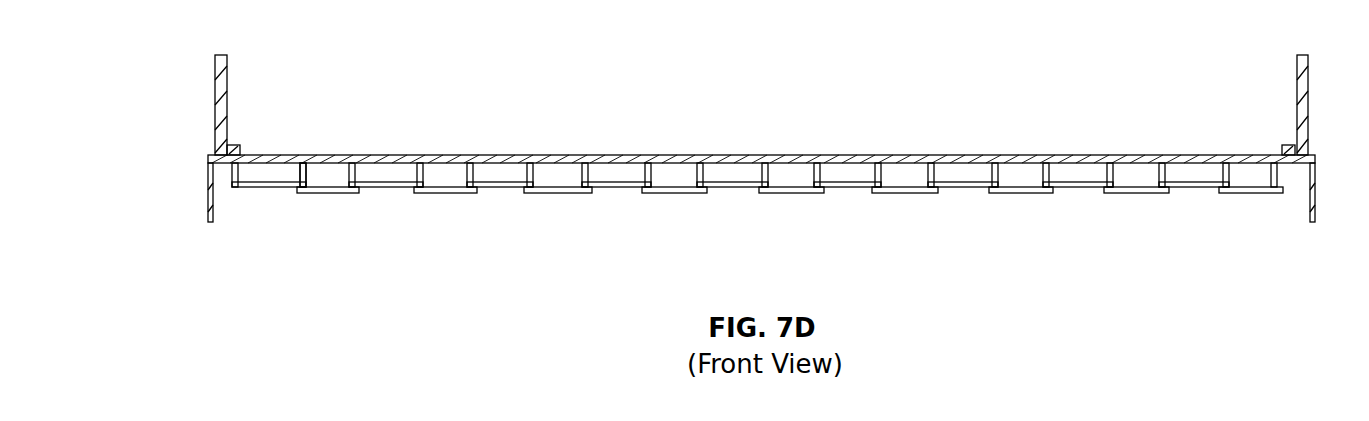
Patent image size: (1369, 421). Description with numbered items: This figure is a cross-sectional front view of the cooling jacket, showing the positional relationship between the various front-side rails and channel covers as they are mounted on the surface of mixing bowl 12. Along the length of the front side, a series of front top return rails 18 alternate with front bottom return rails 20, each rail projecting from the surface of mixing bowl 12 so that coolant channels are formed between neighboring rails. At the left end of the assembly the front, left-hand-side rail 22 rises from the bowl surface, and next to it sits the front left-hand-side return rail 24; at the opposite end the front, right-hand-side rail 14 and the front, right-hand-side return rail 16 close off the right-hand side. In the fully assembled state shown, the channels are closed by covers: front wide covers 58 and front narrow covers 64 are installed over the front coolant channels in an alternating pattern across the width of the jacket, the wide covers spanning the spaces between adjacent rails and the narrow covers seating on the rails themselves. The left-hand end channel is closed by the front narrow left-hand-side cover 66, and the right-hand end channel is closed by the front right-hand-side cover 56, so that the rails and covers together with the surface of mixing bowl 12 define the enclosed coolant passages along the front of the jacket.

The surface of mixing bowl 12 is at (207, 187).
The front, right-hand-side rail 14 is at (1280, 180).
The front, right-hand-side return rail 16 is at (1229, 172).
The front top return rails 18 is at (355, 172).
The front bottom return rails 20 is at (423, 172).
The front, left-hand-side rail 22 is at (240, 172).
The front left-hand-side return rail 24 is at (306, 172).
The front right-hand-side cover 56 is at (1257, 193).
The front wide covers 58 is at (339, 193).
The front narrow covers 64 is at (393, 188).
The front narrow left-hand-side cover 66 is at (269, 188).